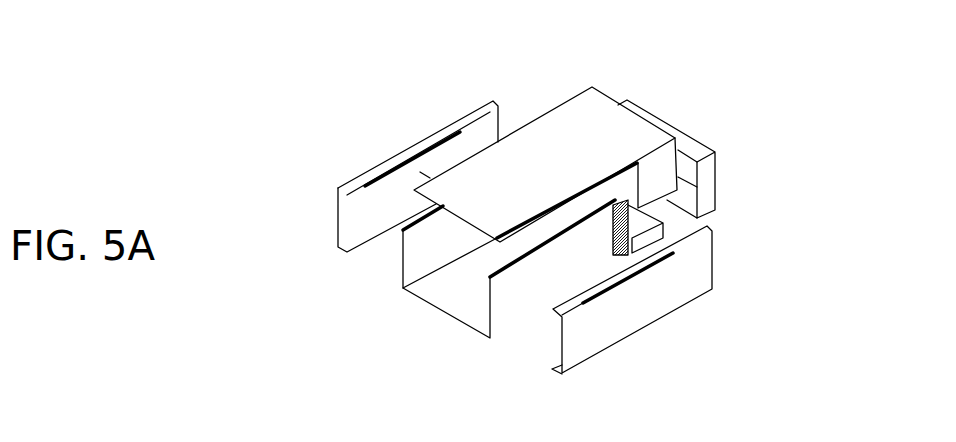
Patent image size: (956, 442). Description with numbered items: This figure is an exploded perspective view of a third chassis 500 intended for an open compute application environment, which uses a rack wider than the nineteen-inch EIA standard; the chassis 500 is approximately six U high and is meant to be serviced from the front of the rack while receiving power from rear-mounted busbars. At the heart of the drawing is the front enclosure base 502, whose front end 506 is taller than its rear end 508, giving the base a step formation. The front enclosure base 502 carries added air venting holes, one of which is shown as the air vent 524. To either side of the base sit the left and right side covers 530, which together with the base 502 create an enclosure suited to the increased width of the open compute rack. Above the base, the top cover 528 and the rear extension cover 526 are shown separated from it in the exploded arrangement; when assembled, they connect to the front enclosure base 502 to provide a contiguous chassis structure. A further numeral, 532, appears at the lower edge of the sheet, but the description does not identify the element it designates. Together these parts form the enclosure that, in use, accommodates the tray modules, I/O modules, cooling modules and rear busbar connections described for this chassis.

The third chassis 500 is at (137, 77).
The front enclosure base 502 is at (500, 337).
The front end 506 is at (410, 331).
The rear end 508 is at (735, 213).
The air vent 524 is at (628, 252).
The rear extension cover 526 is at (657, 117).
The top cover 528 is at (560, 103).
The side covers 530 is at (407, 145).
The component (partially visible) 532 is at (300, 438).